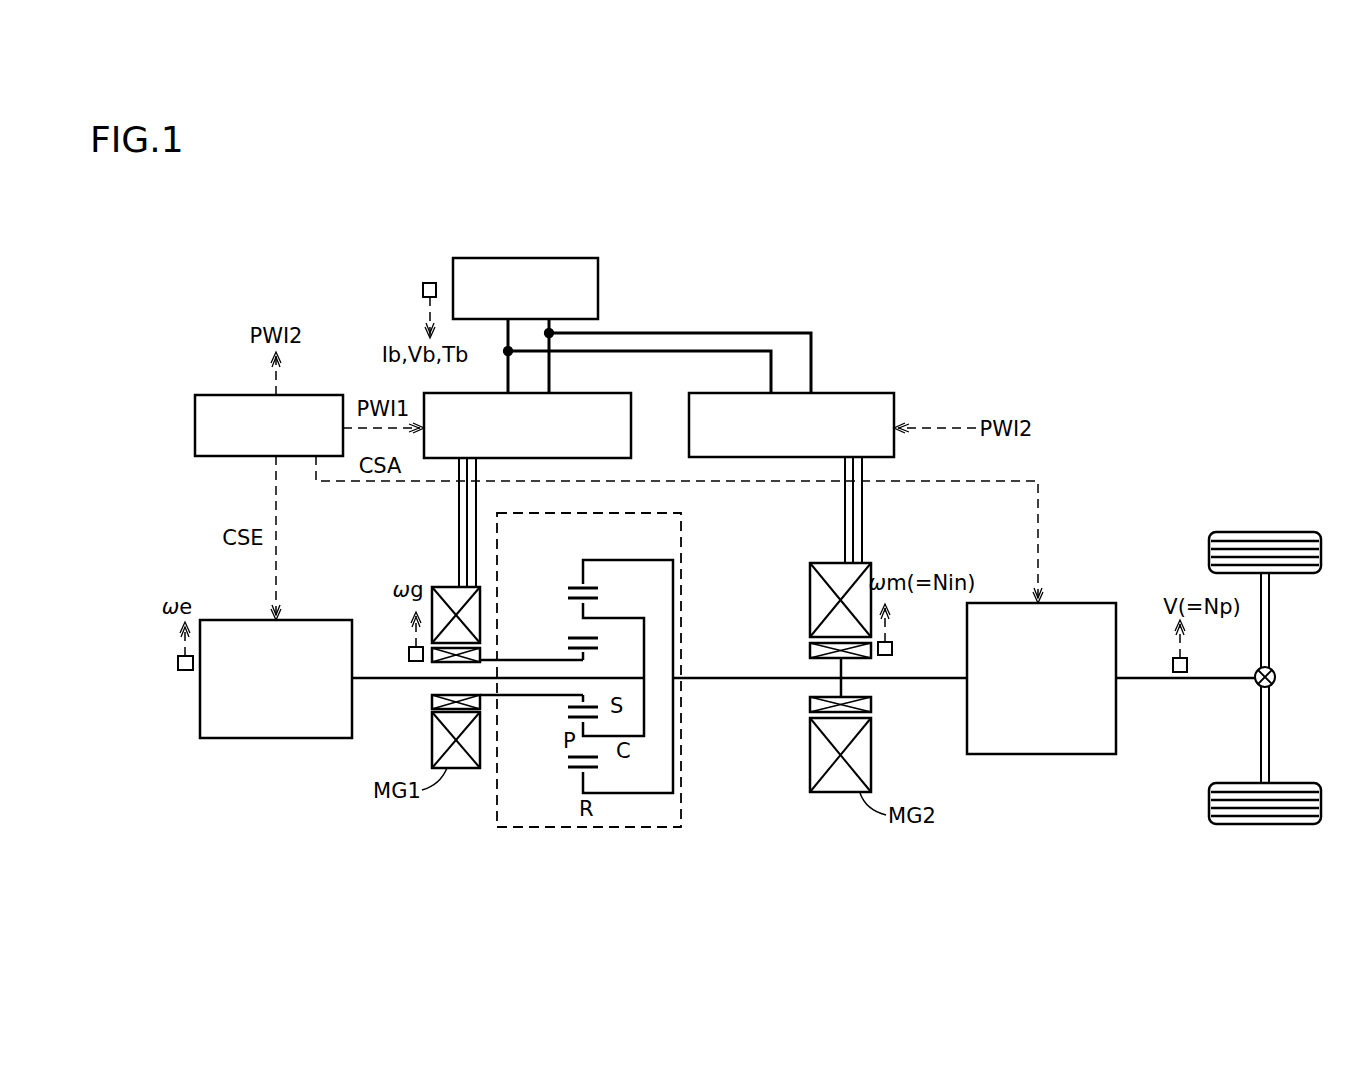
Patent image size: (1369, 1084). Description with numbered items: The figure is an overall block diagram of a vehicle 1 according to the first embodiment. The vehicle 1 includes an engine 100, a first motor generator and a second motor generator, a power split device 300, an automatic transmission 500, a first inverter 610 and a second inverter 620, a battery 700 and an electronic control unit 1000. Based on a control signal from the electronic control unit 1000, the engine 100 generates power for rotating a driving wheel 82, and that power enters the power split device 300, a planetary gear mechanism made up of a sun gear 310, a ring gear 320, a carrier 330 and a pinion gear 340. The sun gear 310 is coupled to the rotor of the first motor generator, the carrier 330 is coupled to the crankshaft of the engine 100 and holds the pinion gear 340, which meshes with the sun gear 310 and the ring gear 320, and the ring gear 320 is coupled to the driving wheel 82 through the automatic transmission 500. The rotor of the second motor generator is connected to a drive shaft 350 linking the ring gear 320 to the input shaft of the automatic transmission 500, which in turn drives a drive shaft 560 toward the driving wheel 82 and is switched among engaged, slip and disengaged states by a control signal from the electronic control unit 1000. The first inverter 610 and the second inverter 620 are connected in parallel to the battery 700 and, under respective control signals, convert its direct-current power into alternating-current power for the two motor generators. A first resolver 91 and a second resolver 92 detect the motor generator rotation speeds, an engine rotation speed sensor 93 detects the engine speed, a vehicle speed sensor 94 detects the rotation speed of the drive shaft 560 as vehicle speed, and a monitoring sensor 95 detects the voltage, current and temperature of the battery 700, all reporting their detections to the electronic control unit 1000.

The vehicle 1 is at (661, 203).
The driving wheel 82 is at (1290, 532).
The resolver 91 is at (409, 656).
The resolver 92 is at (892, 648).
The engine rotation speed sensor 93 is at (178, 664).
The vehicle speed sensor 94 is at (1187, 665).
The monitoring sensor 95 is at (430, 283).
The engine 100 is at (276, 739).
The power split device 300 is at (620, 829).
The sun gear 310 is at (590, 648).
The ring gear 320 is at (573, 588).
The carrier 330 is at (635, 618).
The pinion gear 340 is at (568, 602).
The drive shaft 350 is at (713, 680).
The automatic transmission 500 is at (1036, 755).
The drive shaft 560 is at (1146, 680).
The inverter 610 is at (583, 392).
The inverter 620 is at (846, 392).
The battery 700 is at (598, 284).
The electronic control unit 1000 is at (195, 431).